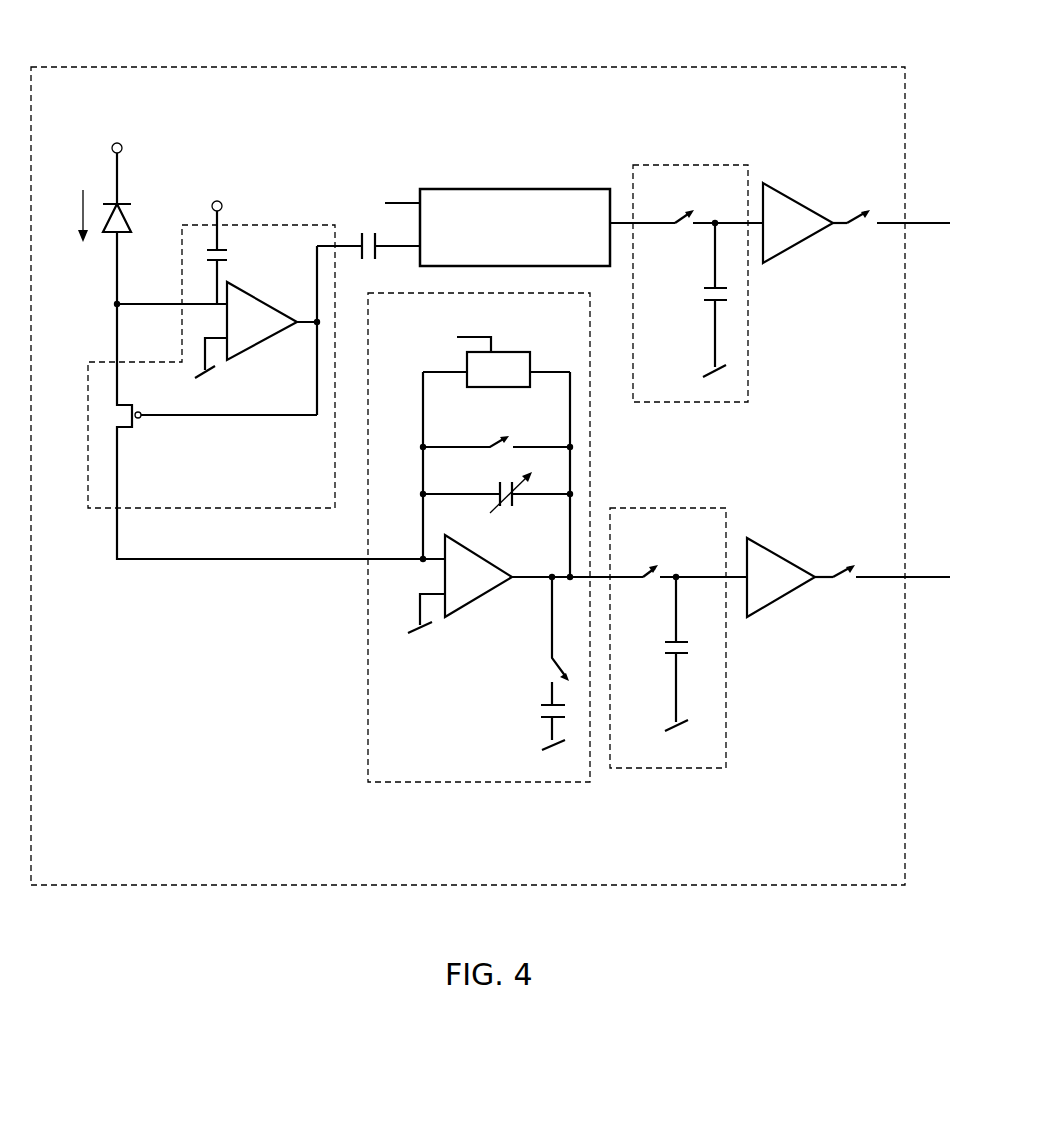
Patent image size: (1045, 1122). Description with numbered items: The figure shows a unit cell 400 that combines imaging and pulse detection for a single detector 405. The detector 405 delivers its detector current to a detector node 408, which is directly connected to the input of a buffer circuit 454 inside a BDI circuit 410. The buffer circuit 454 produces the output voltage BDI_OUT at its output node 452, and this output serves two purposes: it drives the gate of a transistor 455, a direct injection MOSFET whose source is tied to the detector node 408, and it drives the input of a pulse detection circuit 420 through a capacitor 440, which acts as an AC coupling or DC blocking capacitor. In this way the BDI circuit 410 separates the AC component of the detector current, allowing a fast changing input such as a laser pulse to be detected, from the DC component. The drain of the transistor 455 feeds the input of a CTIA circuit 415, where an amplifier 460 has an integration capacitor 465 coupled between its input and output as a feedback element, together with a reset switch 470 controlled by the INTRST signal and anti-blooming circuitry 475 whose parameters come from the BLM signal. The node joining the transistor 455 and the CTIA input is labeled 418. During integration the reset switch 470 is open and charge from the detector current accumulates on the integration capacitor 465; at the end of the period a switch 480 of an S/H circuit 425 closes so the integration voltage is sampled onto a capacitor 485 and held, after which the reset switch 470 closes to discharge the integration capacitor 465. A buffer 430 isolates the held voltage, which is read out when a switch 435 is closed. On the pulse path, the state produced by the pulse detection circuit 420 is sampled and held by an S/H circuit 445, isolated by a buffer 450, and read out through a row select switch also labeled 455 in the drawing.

The unit cell 400 is at (86, 66).
The detector 405 is at (131, 212).
The detector node 408 is at (117, 306).
The BDI circuit 410 is at (272, 226).
The CTIA circuit 415 is at (516, 785).
The CTIA input node 418 is at (423, 562).
The pulse detection circuit 420 is at (507, 188).
The S/H circuit 425 is at (680, 770).
The buffer 430 is at (778, 548).
The switch 435 is at (840, 566).
The capacitor 440 is at (363, 262).
The S/H circuit 445 is at (712, 404).
The buffer 450 is at (777, 182).
The output node 452 is at (300, 324).
The buffer circuit 454 is at (262, 285).
The transistor 455 is at (130, 432).
The amplifier 460 is at (470, 605).
The integration capacitor 465 is at (516, 498).
The reset switch 470 is at (500, 440).
The anti-blooming circuitry 475 is at (515, 352).
The switch 480 is at (648, 570).
The capacitor 485 is at (686, 655).